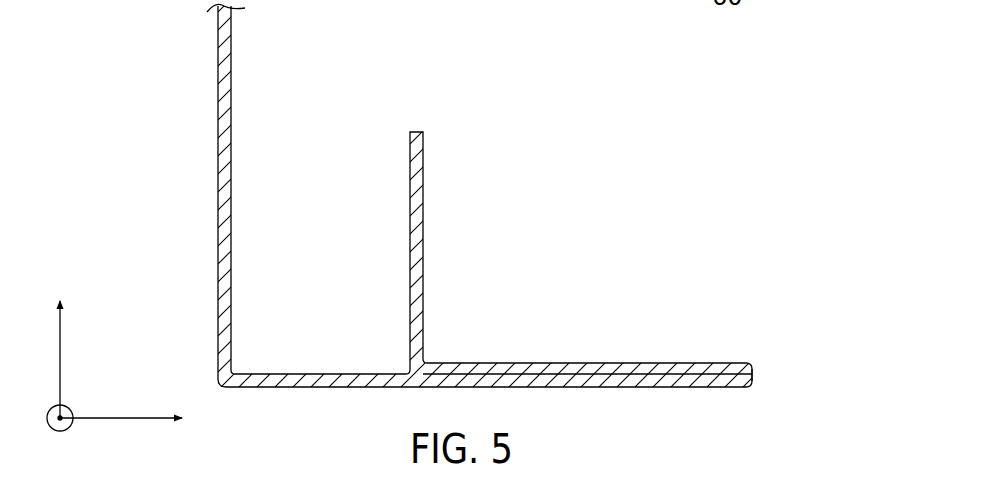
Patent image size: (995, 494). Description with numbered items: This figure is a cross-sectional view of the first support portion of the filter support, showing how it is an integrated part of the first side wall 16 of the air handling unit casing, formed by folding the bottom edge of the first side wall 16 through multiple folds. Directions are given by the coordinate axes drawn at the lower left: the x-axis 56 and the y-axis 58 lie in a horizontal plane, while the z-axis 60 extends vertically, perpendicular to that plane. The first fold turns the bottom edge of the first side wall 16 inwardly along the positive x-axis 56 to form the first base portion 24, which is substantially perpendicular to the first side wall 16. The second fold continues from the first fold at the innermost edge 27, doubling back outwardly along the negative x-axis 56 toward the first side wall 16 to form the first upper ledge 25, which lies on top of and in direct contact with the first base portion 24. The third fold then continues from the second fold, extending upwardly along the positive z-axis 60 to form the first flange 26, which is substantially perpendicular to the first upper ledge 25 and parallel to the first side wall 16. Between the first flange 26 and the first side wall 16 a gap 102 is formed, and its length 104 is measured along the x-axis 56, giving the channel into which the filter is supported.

The first side wall 16 is at (218, 118).
The first base portion 24 is at (333, 388).
The first upper ledge 25 is at (618, 363).
The first flange 26 is at (408, 155).
The innermost edge 27 is at (754, 377).
The gap 102 is at (298, 184).
The length 104 is at (409, 230).
The x-axis 56 is at (115, 420).
The y-axis 58 is at (52, 408).
The z-axis 60 is at (62, 362).